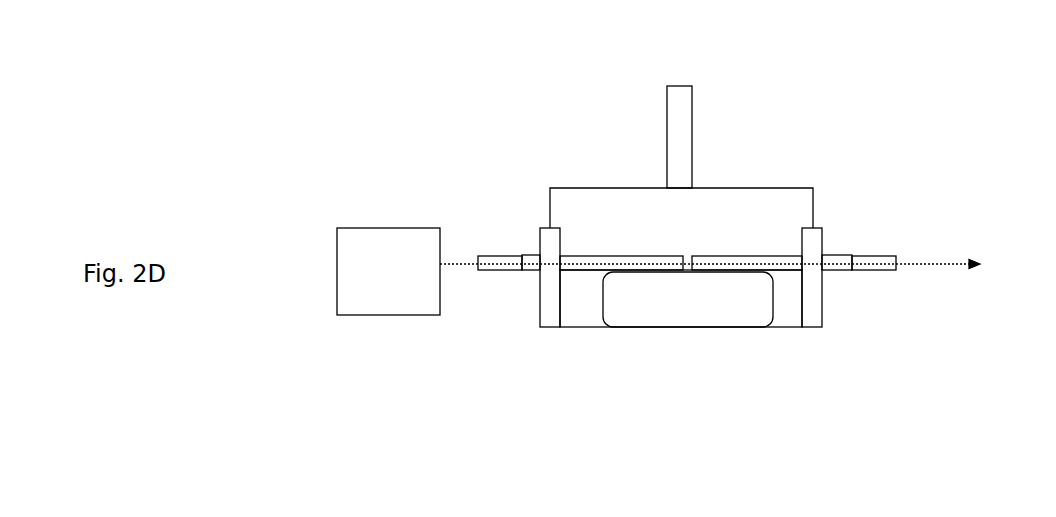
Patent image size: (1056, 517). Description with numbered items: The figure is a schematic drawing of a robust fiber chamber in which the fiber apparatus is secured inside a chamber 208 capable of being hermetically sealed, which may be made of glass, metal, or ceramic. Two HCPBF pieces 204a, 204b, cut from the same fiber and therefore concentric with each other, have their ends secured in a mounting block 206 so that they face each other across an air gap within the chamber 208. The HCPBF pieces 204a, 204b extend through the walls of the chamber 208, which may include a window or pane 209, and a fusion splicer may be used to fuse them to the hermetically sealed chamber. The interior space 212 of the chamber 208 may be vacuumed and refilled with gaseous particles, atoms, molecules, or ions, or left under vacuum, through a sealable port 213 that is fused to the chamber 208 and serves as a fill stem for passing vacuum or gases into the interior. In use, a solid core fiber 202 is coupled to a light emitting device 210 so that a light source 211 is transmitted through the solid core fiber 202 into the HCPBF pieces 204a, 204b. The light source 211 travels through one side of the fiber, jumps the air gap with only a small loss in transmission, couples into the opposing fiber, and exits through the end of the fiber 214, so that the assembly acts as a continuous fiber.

The solid core fiber 202 is at (500, 272).
The HCPBF piece 204a is at (527, 257).
The HCPBF piece 204b is at (838, 260).
The mounting block 206 is at (710, 314).
The chamber 208 is at (772, 188).
The window 209 is at (540, 313).
The light emitting device 210 is at (365, 286).
The light source 211 is at (447, 263).
The interior space 212 is at (633, 350).
The sealable port 213 is at (680, 83).
The end of the fiber 214 is at (897, 267).